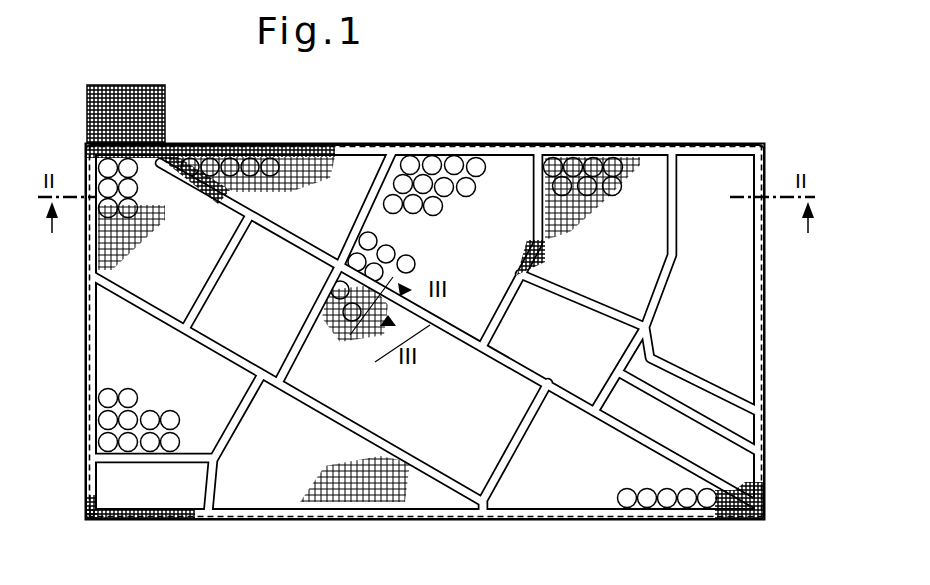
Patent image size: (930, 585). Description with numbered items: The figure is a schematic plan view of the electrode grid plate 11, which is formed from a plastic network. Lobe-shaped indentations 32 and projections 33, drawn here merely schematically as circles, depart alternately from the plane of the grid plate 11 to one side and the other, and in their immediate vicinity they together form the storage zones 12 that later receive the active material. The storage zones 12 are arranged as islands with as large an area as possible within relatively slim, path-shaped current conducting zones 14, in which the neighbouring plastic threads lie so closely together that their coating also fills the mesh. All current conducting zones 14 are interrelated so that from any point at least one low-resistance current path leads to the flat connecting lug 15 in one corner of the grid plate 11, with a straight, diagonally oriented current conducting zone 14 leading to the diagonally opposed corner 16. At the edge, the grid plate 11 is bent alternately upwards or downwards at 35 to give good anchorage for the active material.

The grid plate 11 is at (570, 136).
The storage zones 12 is at (295, 143).
The current conducting zones 14 is at (267, 143).
The connecting lug 15 is at (142, 85).
The diagonally opposed corner 16 is at (764, 521).
The indentations 32 is at (433, 160).
The projections 33 is at (405, 160).
The bent edges 35 is at (340, 143).